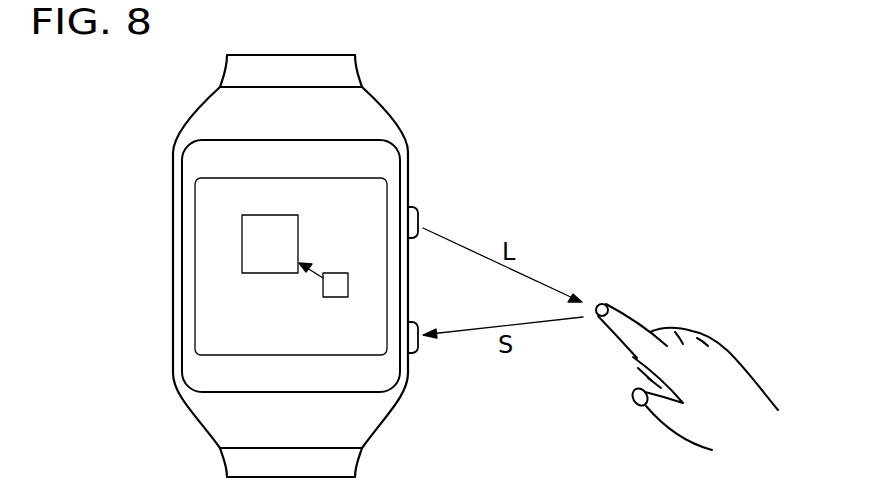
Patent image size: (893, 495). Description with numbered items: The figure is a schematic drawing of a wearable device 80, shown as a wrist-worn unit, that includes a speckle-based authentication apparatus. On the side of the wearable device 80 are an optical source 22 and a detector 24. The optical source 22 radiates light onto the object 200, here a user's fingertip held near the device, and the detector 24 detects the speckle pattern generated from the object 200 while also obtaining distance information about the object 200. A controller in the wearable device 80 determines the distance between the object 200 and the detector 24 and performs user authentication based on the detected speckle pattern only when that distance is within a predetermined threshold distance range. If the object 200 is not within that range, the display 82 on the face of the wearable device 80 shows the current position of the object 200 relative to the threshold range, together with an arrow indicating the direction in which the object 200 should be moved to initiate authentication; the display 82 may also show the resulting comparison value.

The wearable device 80 is at (172, 308).
The display 82 is at (218, 260).
The optical source 22 is at (418, 222).
The detector 24 is at (414, 354).
The object 200 is at (605, 304).